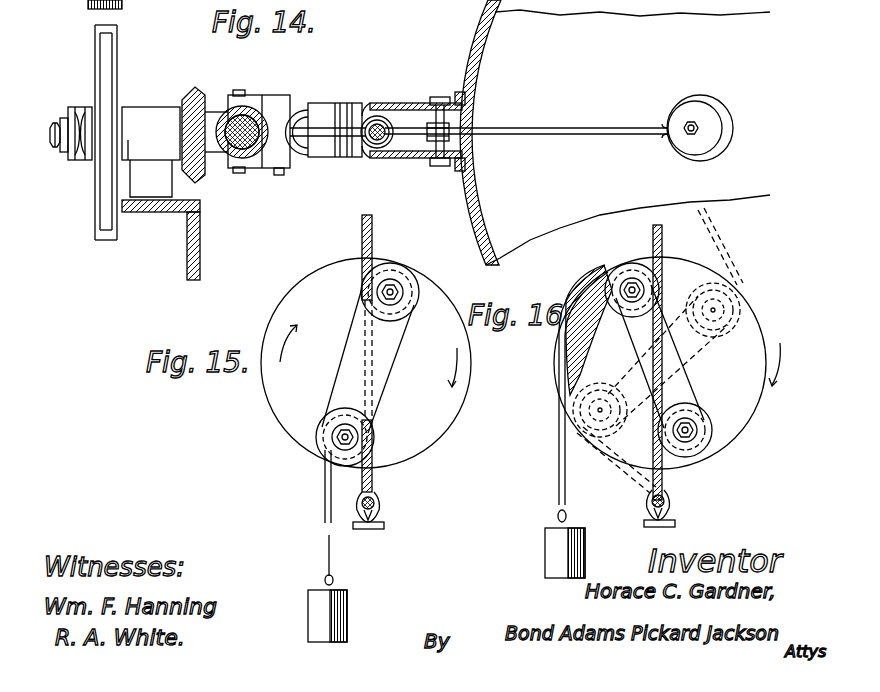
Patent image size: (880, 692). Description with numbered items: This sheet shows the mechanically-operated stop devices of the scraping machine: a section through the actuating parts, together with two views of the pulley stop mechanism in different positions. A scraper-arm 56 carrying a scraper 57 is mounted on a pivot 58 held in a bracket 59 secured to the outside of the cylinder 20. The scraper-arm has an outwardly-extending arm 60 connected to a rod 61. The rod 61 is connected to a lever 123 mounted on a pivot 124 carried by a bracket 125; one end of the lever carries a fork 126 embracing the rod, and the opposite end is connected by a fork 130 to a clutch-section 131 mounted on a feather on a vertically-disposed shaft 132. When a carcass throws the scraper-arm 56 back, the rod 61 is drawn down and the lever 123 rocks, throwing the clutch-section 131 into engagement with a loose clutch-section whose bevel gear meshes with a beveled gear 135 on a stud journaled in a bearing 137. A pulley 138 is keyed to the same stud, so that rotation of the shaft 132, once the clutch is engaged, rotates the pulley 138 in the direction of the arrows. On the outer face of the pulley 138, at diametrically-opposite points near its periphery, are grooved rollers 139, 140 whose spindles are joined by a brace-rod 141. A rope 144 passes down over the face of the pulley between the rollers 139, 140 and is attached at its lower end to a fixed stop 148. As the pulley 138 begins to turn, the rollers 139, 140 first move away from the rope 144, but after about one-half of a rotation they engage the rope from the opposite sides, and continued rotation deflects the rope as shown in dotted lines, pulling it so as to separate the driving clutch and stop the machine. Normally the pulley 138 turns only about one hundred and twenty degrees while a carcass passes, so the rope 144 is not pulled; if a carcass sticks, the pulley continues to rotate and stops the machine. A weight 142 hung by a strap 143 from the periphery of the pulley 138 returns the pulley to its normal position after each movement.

In FIG. 14, the cylinder 20 is at (485, 38).
In FIG. 14, the scraper-arm 56 is at (555, 127).
In FIG. 14, the scraper 57 is at (731, 125).
In FIG. 14, the pivot 58 is at (438, 100).
In FIG. 14, the bracket 59 is at (416, 150).
In FIG. 14, the outwardly-extending arm 60 is at (403, 128).
In FIG. 14, the rod 61 is at (379, 124).
In FIG. 14, the lever 123 is at (324, 126).
In FIG. 14, the pivot 124 is at (280, 175).
In FIG. 14, the bracket 125 is at (323, 160).
In FIG. 14, the fork 126 is at (371, 148).
In FIG. 14, the fork 130 is at (278, 103).
In FIG. 14, the clutch-section 131 is at (252, 103).
In FIG. 14, the shaft 132 is at (230, 122).
In FIG. 14, the beveled gear 135 is at (200, 168).
In FIG. 14, the bearing 137 is at (161, 193).
In FIG. 14, the pulley 138 is at (115, 81).
In FIG. 15, the pulley 138 is at (366, 363).
In FIG. 16, the pulley 138 is at (667, 363).
In FIG. 15, the grooved roller 139 is at (376, 438).
In FIG. 16, the grooved roller 139 is at (625, 263).
In FIG. 14, the grooved roller 140 is at (80, 118).
In FIG. 15, the grooved roller 140 is at (409, 275).
In FIG. 16, the grooved roller 140 is at (708, 422).
In FIG. 14, the brace-rod 141 is at (60, 124).
In FIG. 15, the brace-rod 141 is at (382, 358).
In FIG. 16, the brace-rod 141 is at (680, 391).
In FIG. 15, the weight 142 is at (312, 598).
In FIG. 16, the weight 142 is at (548, 532).
In FIG. 15, the strap 143 is at (323, 493).
In FIG. 16, the strap 143 is at (558, 448).
In FIG. 15, the rope 144 is at (374, 233).
In FIG. 16, the rope 144 is at (661, 232).
In FIG. 15, the fixed stop 148 is at (383, 503).
In FIG. 16, the fixed stop 148 is at (680, 498).